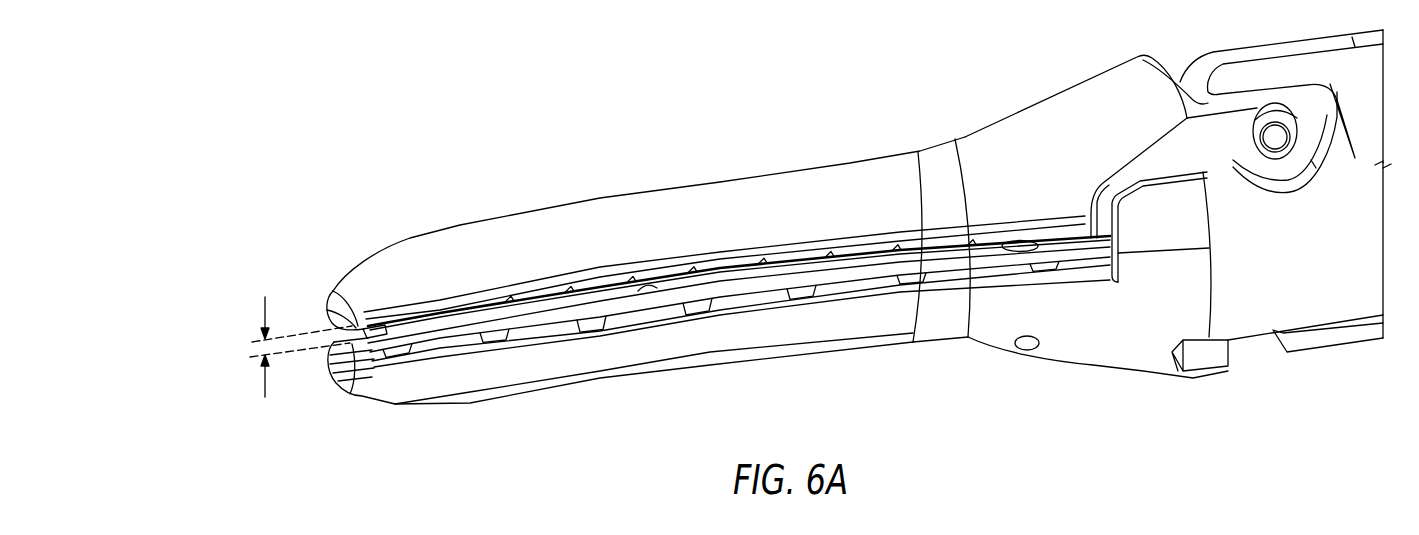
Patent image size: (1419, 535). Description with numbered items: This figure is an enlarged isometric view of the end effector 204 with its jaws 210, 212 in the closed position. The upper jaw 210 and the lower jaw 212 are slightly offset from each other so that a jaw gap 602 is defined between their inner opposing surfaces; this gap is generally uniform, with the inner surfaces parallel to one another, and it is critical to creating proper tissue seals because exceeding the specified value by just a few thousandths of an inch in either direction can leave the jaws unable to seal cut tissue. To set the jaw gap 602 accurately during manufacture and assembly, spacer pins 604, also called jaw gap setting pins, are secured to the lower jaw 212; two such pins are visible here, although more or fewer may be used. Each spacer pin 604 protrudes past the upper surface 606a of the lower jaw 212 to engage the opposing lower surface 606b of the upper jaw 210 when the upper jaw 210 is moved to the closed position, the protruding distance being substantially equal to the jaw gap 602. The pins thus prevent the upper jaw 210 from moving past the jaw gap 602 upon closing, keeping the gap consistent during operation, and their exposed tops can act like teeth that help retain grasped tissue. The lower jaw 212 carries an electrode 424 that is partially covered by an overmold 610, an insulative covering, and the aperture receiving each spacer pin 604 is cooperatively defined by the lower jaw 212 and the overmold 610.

The end effector 204 is at (386, 122).
The upper jaw 210 is at (592, 197).
The lower jaw 212 is at (572, 385).
The electrode 424 is at (440, 340).
The jaw gap 602 is at (262, 297).
The spacer pin 604 is at (377, 335).
The upper surface 606a is at (641, 291).
The lower surface 606b is at (722, 270).
The overmold 610 is at (697, 318).